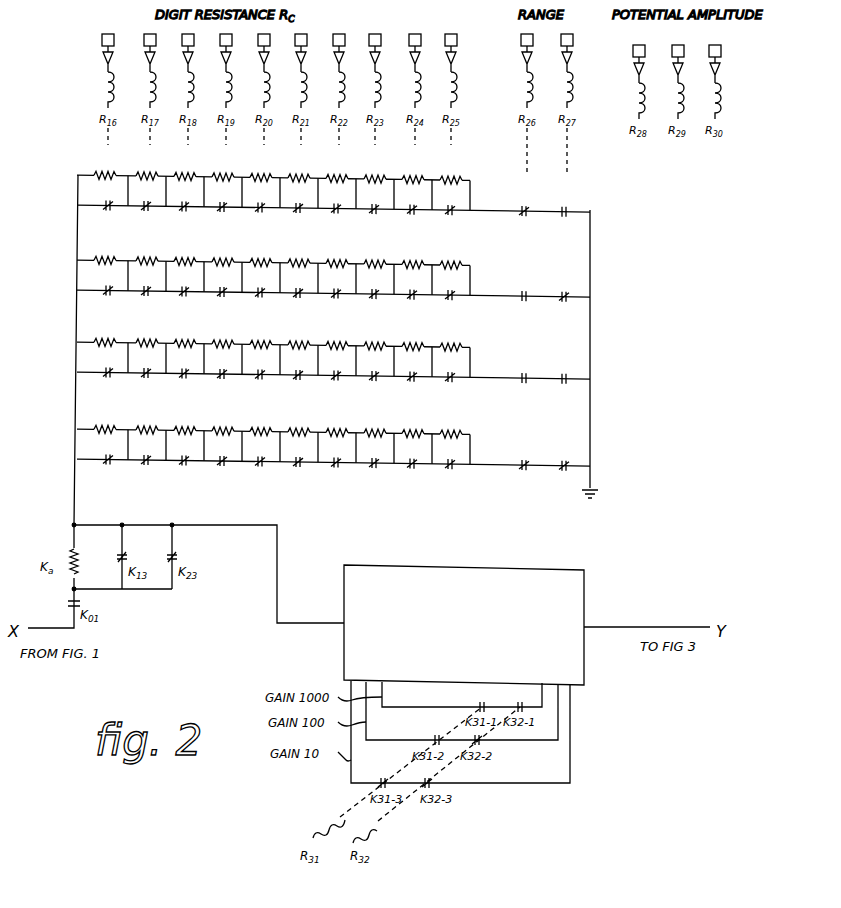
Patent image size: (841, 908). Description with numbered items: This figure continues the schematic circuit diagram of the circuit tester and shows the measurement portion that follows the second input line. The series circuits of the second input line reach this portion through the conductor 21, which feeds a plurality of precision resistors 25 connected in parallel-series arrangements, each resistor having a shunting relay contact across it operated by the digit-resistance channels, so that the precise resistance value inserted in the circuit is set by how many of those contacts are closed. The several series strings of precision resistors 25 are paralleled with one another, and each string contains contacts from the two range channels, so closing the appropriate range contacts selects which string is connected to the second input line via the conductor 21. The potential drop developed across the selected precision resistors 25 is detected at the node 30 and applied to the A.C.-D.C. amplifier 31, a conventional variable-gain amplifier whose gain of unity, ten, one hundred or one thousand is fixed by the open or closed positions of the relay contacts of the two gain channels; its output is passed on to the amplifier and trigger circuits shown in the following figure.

The conductor 21 is at (74, 483).
The precision resistors 25 is at (105, 255).
The node 30 is at (74, 525).
The A.C.-D.C. amplifier 31 is at (372, 565).